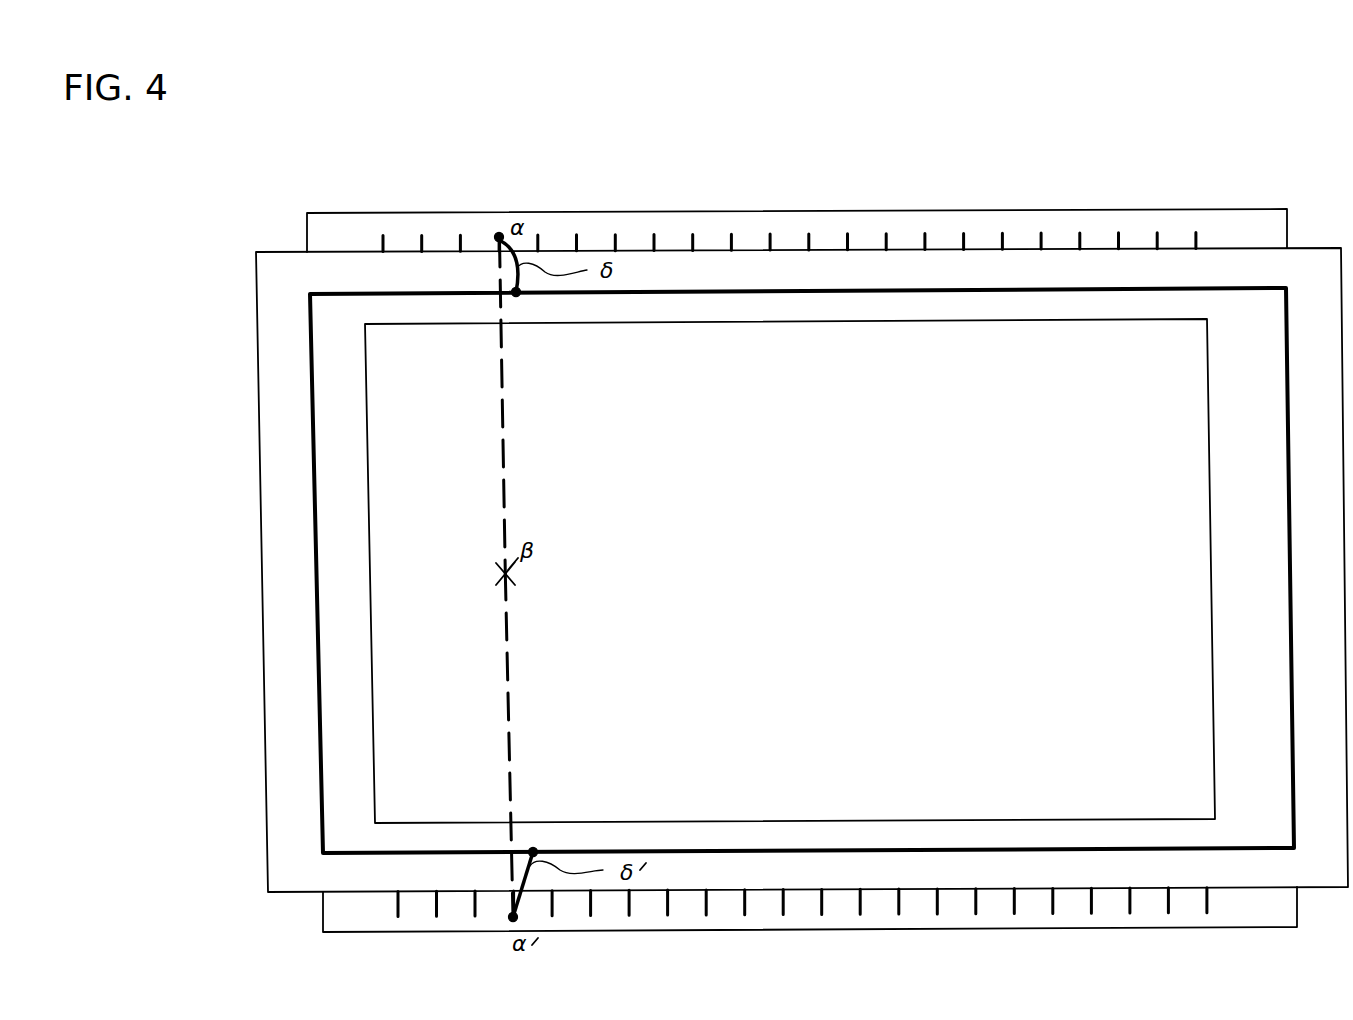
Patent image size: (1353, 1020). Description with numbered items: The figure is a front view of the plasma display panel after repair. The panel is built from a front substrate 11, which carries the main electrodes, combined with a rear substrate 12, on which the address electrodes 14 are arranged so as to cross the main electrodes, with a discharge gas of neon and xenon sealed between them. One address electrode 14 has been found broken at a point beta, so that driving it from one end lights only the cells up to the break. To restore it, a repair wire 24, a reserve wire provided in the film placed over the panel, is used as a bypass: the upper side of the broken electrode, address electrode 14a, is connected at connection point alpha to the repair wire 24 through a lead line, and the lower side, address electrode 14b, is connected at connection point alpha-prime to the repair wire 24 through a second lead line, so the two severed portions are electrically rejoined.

The front substrate 11 is at (280, 830).
The rear substrate 12 is at (338, 911).
The address electrode 14 is at (383, 240).
The upper side of the address electrode 14a is at (503, 412).
The lower side of the address electrode 14b is at (510, 653).
The repair wire 24 is at (309, 322).